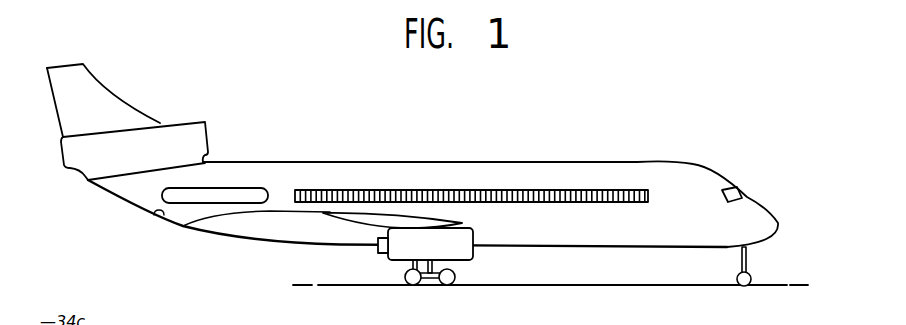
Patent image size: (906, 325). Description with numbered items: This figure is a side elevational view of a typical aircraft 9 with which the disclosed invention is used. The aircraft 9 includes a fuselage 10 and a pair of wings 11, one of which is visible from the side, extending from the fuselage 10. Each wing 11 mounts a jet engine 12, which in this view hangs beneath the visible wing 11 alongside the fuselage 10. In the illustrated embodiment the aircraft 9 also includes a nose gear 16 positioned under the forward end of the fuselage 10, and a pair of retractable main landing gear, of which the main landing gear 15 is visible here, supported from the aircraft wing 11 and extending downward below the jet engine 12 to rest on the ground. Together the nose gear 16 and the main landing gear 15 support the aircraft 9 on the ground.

The aircraft 9 is at (603, 166).
The fuselage 10 is at (538, 233).
The wing 11 is at (370, 222).
The jet engine 12 is at (462, 257).
The retractable main landing gear 15 is at (428, 287).
The nose gear 16 is at (752, 260).